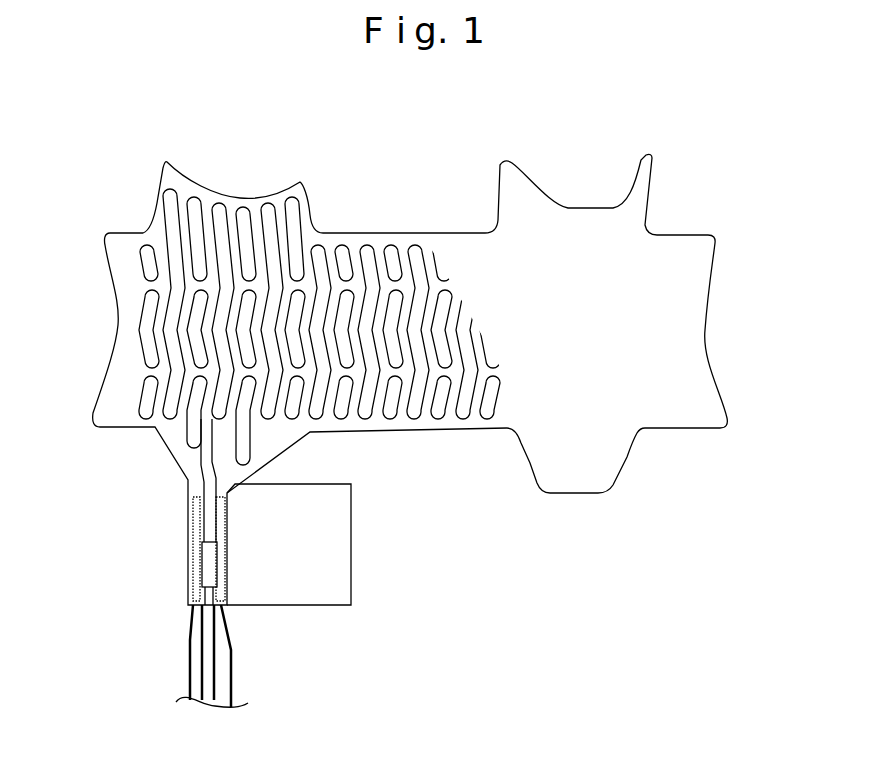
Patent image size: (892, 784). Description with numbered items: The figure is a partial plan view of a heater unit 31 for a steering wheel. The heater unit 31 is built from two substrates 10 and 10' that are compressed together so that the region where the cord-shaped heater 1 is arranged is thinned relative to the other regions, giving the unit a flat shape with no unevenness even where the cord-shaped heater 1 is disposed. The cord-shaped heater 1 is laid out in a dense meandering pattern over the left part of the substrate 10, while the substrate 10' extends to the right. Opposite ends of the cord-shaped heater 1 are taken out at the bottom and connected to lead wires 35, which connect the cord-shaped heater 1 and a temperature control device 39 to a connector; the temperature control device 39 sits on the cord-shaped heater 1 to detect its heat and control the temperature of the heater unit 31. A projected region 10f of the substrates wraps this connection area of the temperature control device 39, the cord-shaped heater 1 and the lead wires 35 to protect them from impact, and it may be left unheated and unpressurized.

The cord-shaped heater 1 is at (413, 428).
The substrate 10 is at (300, 383).
The substrate 10' is at (606, 336).
The heater unit 31 is at (633, 480).
The projected region 10f is at (352, 553).
The temperature control device 39 is at (207, 572).
The lead wires 35 is at (213, 655).